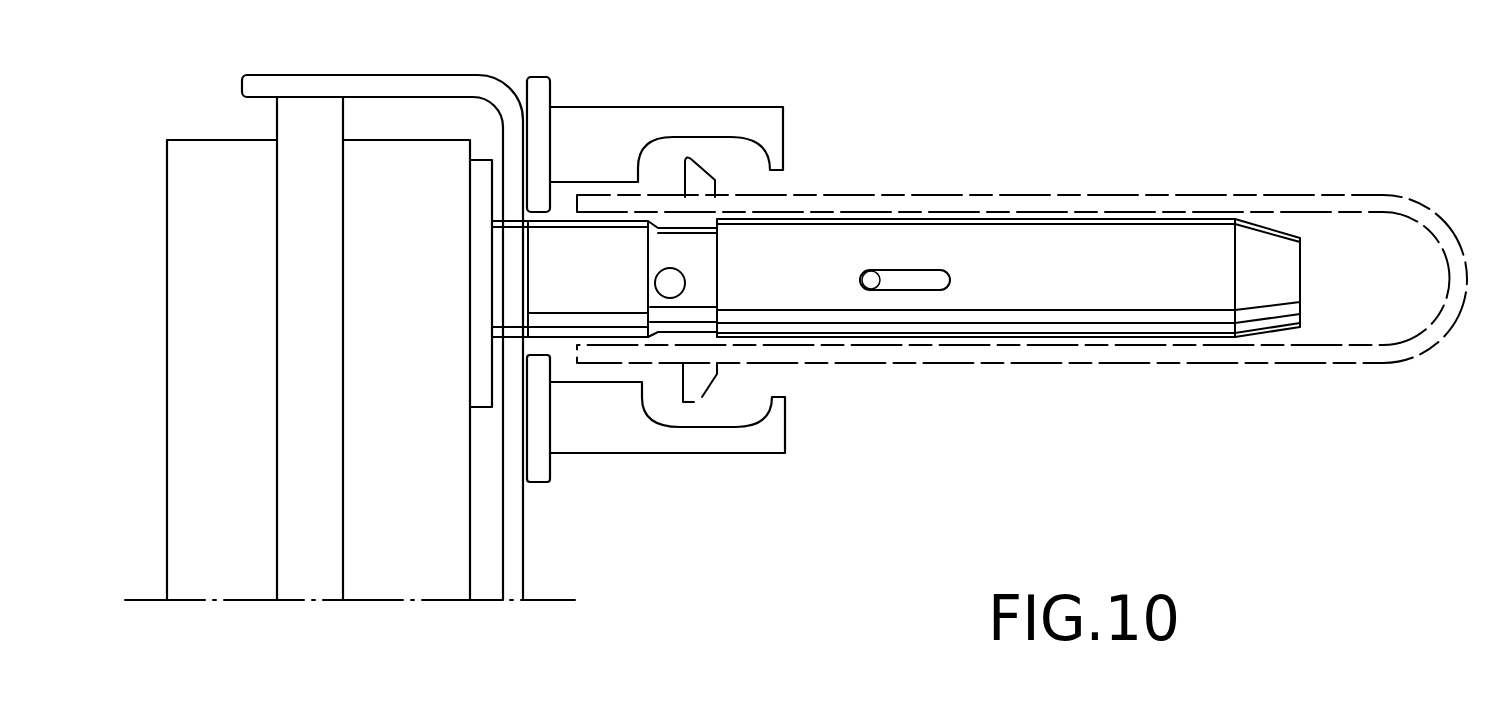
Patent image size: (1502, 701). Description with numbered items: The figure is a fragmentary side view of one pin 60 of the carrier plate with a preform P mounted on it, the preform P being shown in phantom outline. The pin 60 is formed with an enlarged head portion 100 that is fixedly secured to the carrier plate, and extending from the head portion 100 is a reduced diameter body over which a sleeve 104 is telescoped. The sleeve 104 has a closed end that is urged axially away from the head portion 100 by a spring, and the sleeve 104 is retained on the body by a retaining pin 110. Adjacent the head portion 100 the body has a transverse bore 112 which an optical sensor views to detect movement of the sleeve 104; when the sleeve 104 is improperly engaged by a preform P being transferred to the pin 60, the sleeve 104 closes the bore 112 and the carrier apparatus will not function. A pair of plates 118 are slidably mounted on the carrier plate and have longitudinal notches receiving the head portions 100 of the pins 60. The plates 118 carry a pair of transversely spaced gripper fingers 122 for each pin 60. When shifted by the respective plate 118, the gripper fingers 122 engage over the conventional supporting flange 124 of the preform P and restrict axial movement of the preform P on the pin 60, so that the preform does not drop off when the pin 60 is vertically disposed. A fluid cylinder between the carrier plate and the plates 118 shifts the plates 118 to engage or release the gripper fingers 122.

The pin 60 is at (557, 337).
The enlarged head portion 100 is at (605, 296).
The sleeve 104 is at (1115, 323).
The retaining pin 110 is at (890, 235).
The transverse bore 112 is at (684, 277).
The plate 118 is at (523, 562).
The gripper finger 122 is at (663, 107).
The supporting flange 124 is at (713, 377).
The preform P is at (1320, 190).